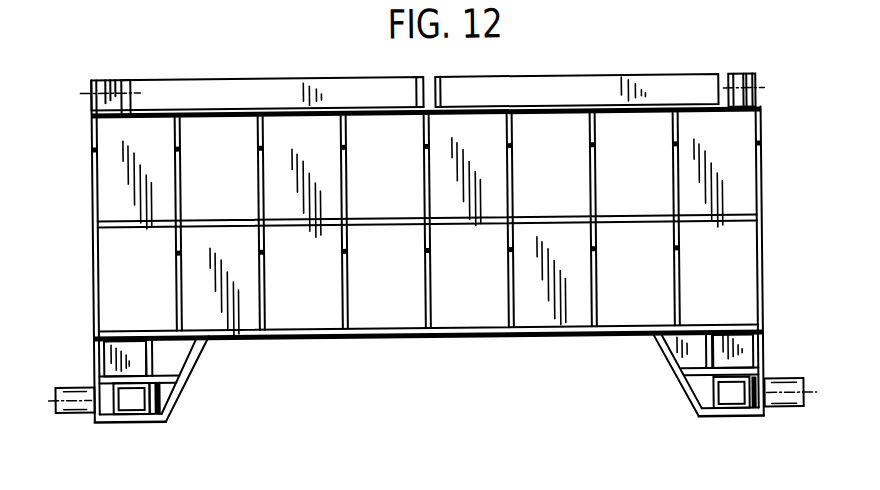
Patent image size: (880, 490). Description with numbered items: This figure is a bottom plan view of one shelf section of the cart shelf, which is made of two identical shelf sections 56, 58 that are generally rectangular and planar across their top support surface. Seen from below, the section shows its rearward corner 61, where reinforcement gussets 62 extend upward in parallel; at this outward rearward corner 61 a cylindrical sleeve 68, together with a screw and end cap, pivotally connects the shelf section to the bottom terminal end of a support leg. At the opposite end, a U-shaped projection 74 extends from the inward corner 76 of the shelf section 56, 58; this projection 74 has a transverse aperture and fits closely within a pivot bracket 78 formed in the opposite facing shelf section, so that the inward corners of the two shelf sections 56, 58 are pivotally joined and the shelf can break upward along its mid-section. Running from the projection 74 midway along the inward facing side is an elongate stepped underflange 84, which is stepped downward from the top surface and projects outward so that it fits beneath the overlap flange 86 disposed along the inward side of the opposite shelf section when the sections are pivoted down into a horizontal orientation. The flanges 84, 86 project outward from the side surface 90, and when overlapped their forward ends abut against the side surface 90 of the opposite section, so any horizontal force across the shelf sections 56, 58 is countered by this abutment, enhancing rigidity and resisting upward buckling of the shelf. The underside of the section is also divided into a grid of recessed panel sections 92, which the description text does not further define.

The shelf section 56 is at (464, 338).
The shelf section 58 is at (428, 335).
The rearward corner 61 is at (181, 376).
The reinforcement gusset 62 is at (121, 373).
The cylindrical sleeve 68 is at (68, 412).
The U-shaped projection 74 is at (754, 77).
The inward corner 76 is at (764, 131).
The pivot bracket 78 is at (92, 77).
The stepped underflange 84 is at (604, 78).
The overlap flange 86 is at (270, 77).
The side surface 90 is at (207, 105).
The panel sections 92 is at (339, 263).